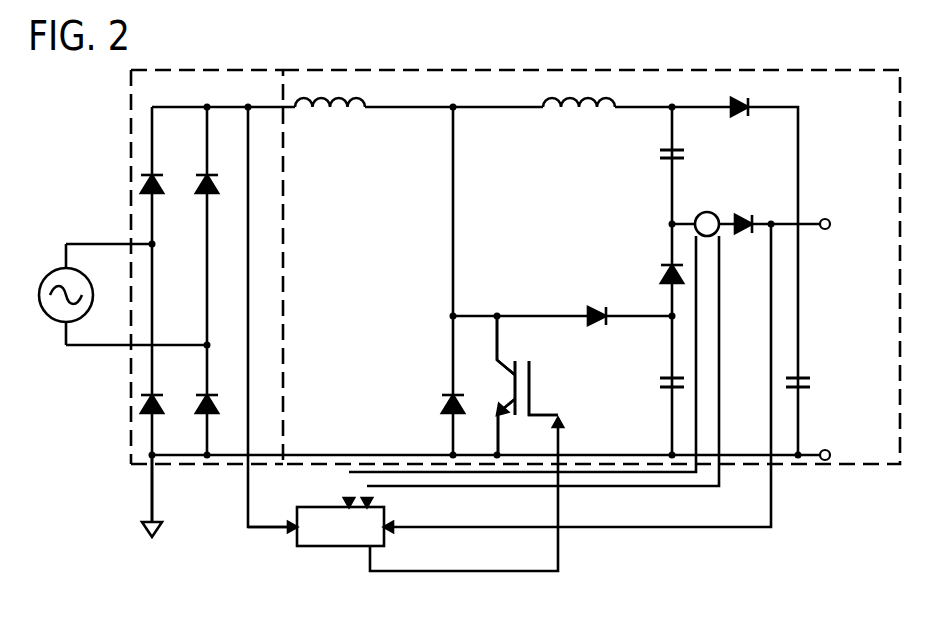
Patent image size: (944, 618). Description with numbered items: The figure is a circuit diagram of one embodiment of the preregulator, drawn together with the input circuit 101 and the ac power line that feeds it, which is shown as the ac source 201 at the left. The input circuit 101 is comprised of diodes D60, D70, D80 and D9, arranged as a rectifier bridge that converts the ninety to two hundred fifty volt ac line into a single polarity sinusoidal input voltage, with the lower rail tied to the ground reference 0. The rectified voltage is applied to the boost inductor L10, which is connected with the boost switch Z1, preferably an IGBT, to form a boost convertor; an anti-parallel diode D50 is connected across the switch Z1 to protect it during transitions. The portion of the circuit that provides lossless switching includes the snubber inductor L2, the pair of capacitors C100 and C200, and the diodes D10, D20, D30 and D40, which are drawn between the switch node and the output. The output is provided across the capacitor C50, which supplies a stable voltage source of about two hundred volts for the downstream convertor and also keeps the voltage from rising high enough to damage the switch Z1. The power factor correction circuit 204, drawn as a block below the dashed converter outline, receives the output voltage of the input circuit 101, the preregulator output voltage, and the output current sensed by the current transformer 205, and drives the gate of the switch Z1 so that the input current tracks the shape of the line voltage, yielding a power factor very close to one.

The input circuit 101 is at (432, 282).
The AC power source 201 is at (41, 312).
The power factor correction circuit 204 is at (708, 70).
The current detector 205 is at (710, 212).
The ground 0 is at (159, 500).
The diode D60 is at (166, 198).
The diode D70 is at (220, 198).
The diode D80 is at (166, 418).
The diode D9 is at (216, 418).
The boost inductor L10 is at (330, 89).
The snubber inductor L2 is at (579, 89).
The diode D10 is at (758, 96).
The diode D20 is at (754, 209).
The diode D30 is at (649, 269).
The diode D40 is at (597, 302).
The anti-parallel diode D50 is at (431, 410).
The capacitor C100 is at (697, 147).
The capacitor C200 is at (642, 385).
The capacitor C50 is at (820, 385).
The boost switch Z1 is at (527, 385).